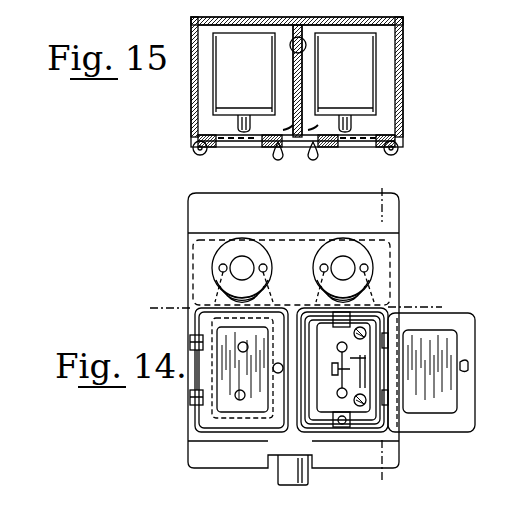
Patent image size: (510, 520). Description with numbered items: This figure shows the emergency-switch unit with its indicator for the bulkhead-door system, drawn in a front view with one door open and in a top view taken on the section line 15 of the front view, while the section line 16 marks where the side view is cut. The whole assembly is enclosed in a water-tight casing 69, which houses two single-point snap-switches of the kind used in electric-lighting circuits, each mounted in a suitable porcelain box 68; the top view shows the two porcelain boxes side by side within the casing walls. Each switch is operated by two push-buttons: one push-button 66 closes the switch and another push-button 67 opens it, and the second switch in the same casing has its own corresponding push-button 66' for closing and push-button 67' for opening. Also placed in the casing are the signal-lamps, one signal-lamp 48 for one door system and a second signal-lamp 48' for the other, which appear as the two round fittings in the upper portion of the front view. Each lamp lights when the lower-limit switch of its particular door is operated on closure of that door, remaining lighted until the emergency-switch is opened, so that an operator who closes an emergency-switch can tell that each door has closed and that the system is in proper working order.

In FIG. 15, the water-tight casing 69 is at (313, 88).
In FIG. 15, the porcelain box 68 is at (378, 108).
In FIG. 15, the push-button 66 is at (334, 124).
In FIG. 14, the push-button 66 is at (254, 342).
In FIG. 14, the push-button 67 is at (250, 400).
In FIG. 14, the push-button 66' is at (334, 342).
In FIG. 14, the push-button 67' is at (333, 398).
In FIG. 14, the signal-lamp 48 is at (234, 270).
In FIG. 14, the signal-lamp 48' is at (333, 270).
In FIG. 14, the section line x15 x15 15 is at (434, 309).
In FIG. 14, the section line x16 x16 16 is at (376, 492).